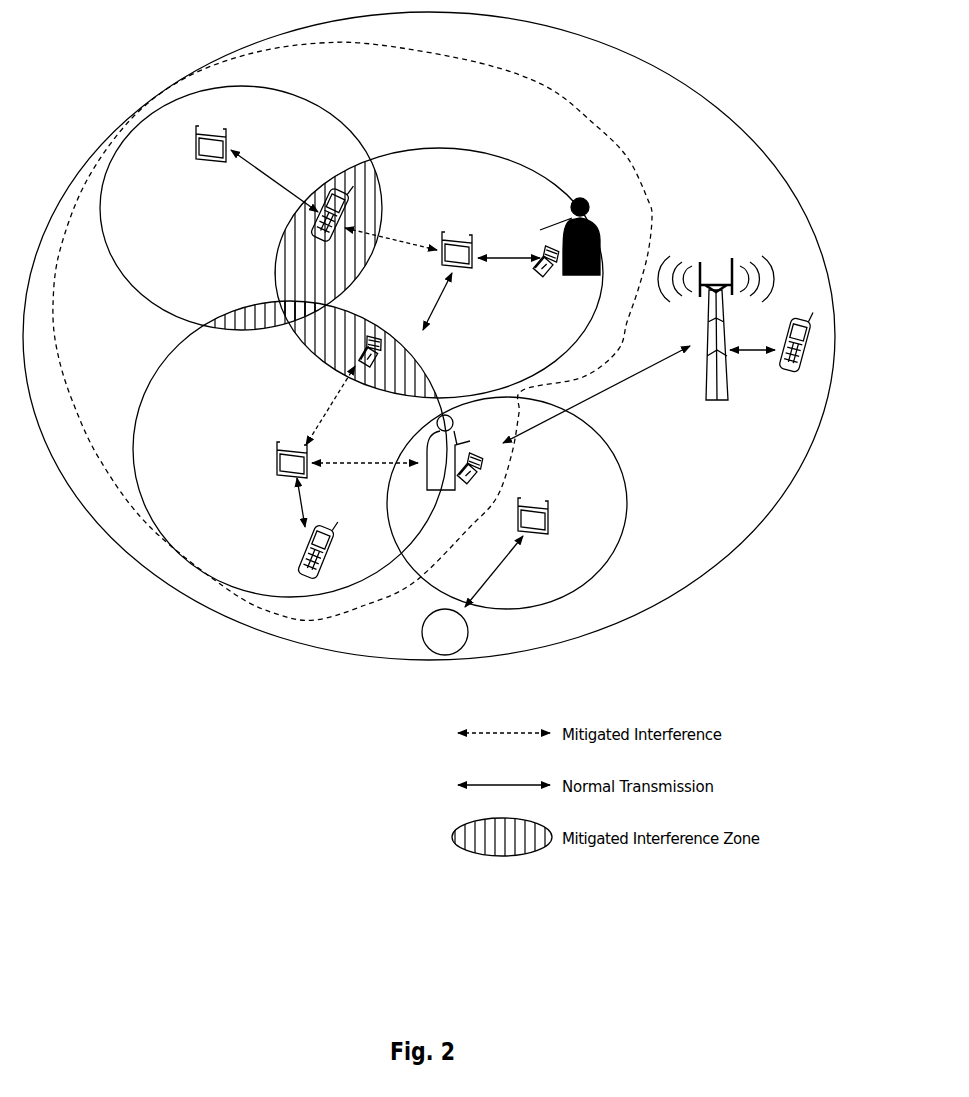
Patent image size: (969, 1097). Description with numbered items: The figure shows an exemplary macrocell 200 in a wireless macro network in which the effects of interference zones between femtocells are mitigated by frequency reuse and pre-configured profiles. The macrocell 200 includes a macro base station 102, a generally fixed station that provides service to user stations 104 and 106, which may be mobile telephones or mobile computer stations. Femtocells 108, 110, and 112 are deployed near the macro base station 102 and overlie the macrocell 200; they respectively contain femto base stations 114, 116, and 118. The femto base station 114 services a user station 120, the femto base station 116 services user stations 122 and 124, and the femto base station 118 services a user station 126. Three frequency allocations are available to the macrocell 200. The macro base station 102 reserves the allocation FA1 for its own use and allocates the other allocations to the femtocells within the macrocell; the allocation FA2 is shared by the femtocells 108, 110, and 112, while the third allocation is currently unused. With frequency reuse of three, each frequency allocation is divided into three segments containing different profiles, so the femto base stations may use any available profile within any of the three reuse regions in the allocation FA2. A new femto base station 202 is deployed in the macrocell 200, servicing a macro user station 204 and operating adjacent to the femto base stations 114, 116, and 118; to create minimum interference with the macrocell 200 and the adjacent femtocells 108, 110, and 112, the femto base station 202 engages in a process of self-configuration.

The macrocell 200 is at (612, 46).
The frequency allocation FA2 is at (598, 118).
The frequency allocation FA1 is at (678, 396).
The macro base station 102 is at (718, 402).
The user station 104 is at (780, 350).
The user station 106 is at (476, 448).
The femtocell 108 is at (282, 90).
The femtocell 110 is at (524, 170).
The femtocell 112 is at (150, 380).
The femto base station 114 is at (228, 140).
The femto base station 116 is at (458, 240).
The femto base station 118 is at (276, 454).
The user station 120 is at (318, 245).
The user station 122 is at (398, 328).
The user station 124 is at (596, 218).
The user station 126 is at (300, 560).
The femto base station 202 is at (548, 512).
The macro user station 204 is at (445, 632).